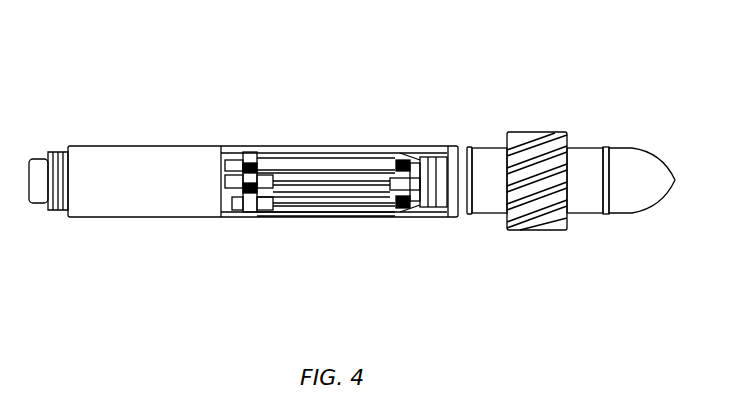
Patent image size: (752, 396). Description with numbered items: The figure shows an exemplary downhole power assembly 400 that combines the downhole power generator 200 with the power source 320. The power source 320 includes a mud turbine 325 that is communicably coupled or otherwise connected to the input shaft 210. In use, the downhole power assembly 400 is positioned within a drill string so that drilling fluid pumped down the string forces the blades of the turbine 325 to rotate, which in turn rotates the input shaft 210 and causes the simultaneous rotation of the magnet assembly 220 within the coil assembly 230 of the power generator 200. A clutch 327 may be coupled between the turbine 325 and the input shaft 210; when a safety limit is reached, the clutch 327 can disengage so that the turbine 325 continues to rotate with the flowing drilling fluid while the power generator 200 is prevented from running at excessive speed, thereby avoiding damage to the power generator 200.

The downhole power assembly 400 is at (321, 35).
The downhole power generator 200 is at (464, 252).
The magnet assembly 220 is at (333, 168).
The input shaft 210 is at (403, 164).
The coil assembly 230 is at (352, 206).
The power source 320 is at (678, 252).
The clutch 327 is at (474, 153).
The mud turbine 325 is at (553, 143).